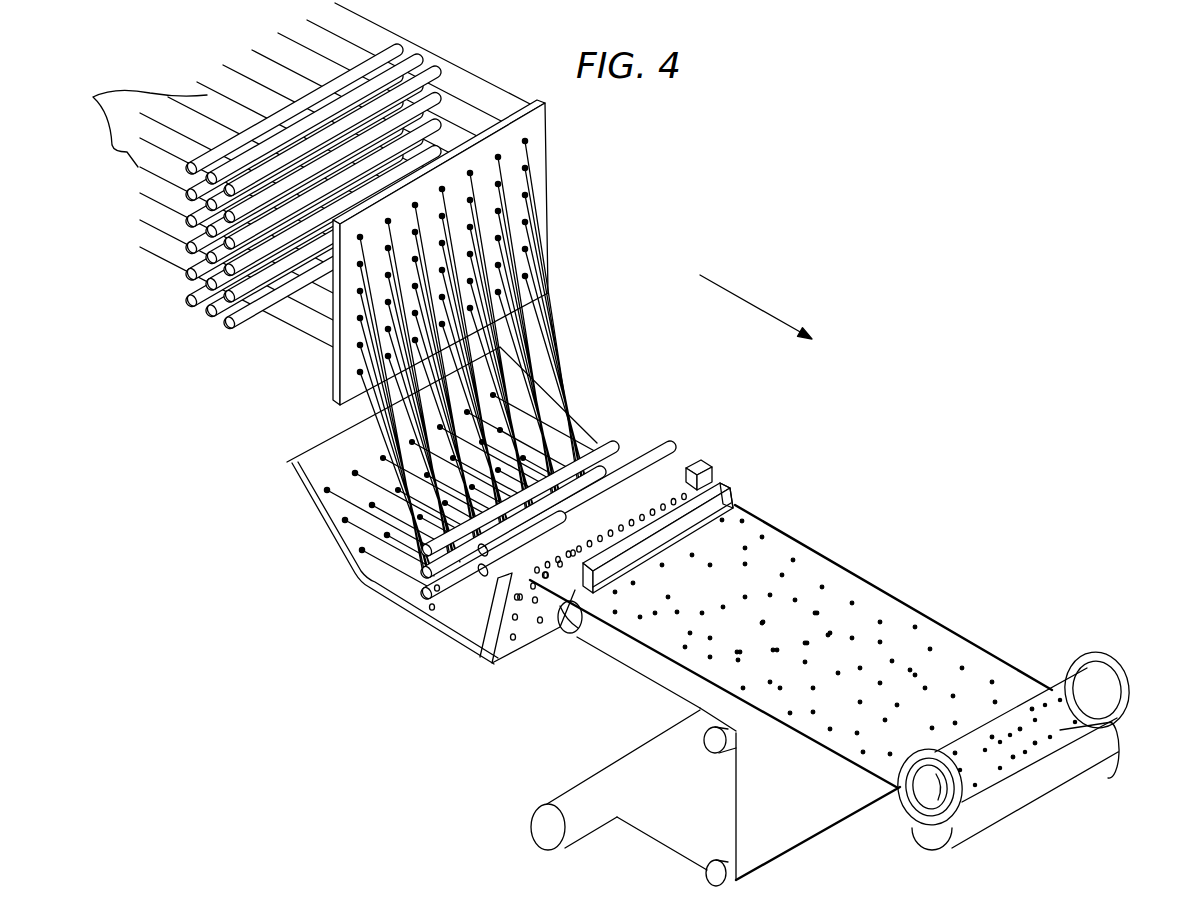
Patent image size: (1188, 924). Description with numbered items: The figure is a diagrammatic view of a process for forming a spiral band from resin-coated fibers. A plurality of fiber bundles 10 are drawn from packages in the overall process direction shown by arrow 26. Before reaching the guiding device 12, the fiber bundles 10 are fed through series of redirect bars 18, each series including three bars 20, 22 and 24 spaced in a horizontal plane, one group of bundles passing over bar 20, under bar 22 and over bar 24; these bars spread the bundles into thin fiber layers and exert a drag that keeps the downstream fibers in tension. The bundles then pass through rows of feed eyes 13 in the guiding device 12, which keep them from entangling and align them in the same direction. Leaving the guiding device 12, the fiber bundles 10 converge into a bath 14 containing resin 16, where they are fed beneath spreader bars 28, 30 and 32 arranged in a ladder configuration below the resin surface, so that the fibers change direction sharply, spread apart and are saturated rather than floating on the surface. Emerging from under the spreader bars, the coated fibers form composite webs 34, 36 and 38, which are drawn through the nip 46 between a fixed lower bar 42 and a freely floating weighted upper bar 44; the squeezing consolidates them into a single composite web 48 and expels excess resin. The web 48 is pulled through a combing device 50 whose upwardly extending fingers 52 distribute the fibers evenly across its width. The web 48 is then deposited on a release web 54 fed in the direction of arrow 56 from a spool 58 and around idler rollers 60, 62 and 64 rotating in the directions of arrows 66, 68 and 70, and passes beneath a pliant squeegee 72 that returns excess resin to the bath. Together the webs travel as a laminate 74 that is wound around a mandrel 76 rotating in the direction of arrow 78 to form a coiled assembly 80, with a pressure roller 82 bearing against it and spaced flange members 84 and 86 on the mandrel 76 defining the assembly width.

The fiber bundles 10 is at (301, 175).
The guiding device 12 is at (335, 402).
The feed eyes 13 is at (530, 143).
The bath 14 is at (295, 480).
The resin 16 is at (475, 590).
The redirect bars 18 is at (170, 297).
The bar 20 is at (188, 309).
The bar 22 is at (210, 320).
The bar 24 is at (231, 333).
The arrow 26 is at (762, 243).
The spreader bar 28 is at (372, 557).
The spreader bar 30 is at (405, 585).
The spreader bar 32 is at (420, 600).
The composite web 34 is at (434, 565).
The composite web 36 is at (447, 570).
The composite web 38 is at (463, 585).
The fixed lower bar 42 is at (487, 605).
The weighted upper bar 44 is at (618, 443).
The nip 46 is at (543, 463).
The composite web 48 is at (672, 463).
The combing device 50 is at (527, 610).
The fingers 52 is at (700, 470).
The release web 54 is at (735, 800).
The arrow 56 is at (531, 828).
The spool 58 is at (555, 848).
The idler roller 60 is at (704, 880).
The idler roller 62 is at (705, 742).
The idler roller 64 is at (577, 637).
The arrow 66 is at (738, 881).
The arrow 68 is at (705, 753).
The arrow 70 is at (582, 626).
The squeegee 72 is at (727, 475).
The laminate 74 is at (866, 590).
The mandrel 76 is at (945, 850).
The arrow 78 is at (930, 800).
The assembly 80 is at (1115, 725).
The pressure roller 82 is at (1030, 790).
The flange member 84 is at (1093, 652).
The flange member 86 is at (905, 752).